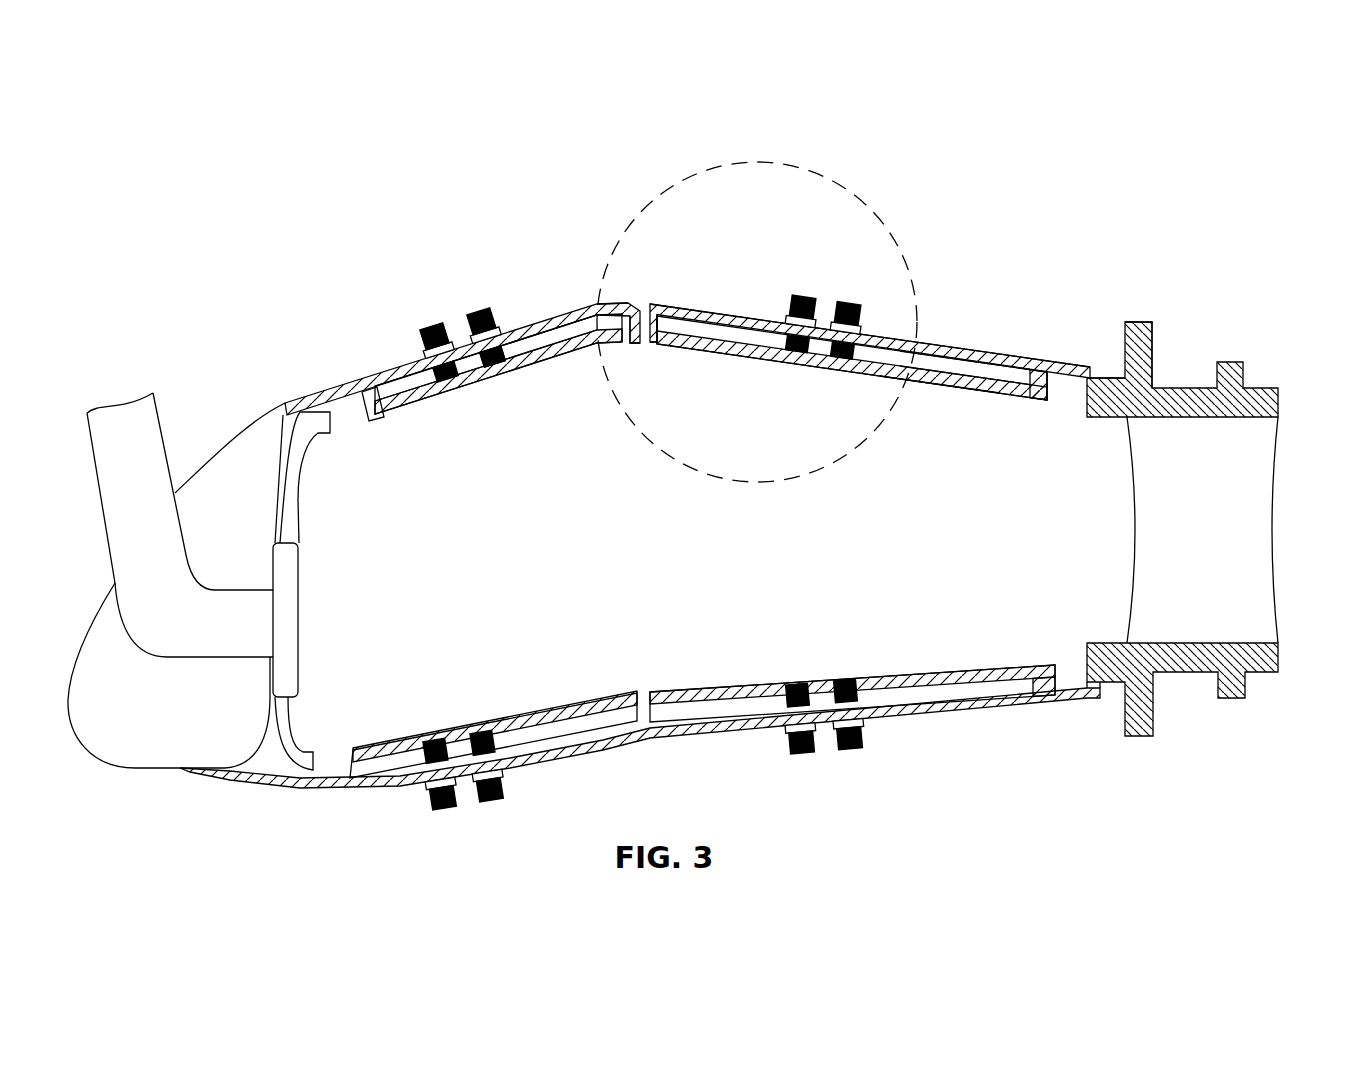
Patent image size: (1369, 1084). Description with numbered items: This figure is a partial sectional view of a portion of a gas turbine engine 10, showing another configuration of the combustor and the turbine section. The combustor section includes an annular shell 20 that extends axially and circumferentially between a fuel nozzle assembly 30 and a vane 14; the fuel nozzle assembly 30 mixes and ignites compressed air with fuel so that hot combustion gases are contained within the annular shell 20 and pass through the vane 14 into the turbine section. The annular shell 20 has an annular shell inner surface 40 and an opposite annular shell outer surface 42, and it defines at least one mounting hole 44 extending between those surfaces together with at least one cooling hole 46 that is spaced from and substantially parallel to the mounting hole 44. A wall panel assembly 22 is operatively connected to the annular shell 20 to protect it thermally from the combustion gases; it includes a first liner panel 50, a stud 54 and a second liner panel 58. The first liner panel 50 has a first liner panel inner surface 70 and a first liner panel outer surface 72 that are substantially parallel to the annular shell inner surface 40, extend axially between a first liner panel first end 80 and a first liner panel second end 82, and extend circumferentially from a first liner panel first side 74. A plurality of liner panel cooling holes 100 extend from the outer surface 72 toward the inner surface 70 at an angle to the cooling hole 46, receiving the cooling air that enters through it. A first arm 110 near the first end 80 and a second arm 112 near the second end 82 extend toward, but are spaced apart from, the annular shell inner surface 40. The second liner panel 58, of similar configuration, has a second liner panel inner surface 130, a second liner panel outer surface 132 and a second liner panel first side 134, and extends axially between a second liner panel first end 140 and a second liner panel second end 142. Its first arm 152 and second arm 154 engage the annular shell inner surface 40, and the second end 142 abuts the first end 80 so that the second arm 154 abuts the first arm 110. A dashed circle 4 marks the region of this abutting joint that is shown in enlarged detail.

The gas turbine engine 10 is at (153, 180).
The detail region of FIG. 4 is at (757, 162).
The vane 14 is at (1275, 596).
The annular shell 20 is at (1077, 345).
The wall panel assembly 22 is at (598, 390).
The fuel nozzle assembly 30 is at (232, 672).
The annular shell inner surface 40 is at (1052, 398).
The annular shell outer surface 42 is at (1128, 322).
The mounting hole 44 is at (795, 325).
The cooling hole 46 is at (745, 307).
The first liner panel 50 is at (920, 395).
The stud 54 is at (800, 292).
The second liner panel 58 is at (470, 392).
The first liner panel inner surface 70 is at (1000, 402).
The first liner panel outer surface 72 is at (1000, 372).
The first liner panel first side 74 is at (965, 362).
The first liner panel first end 80 is at (661, 347).
The first liner panel second end 82 is at (1042, 402).
The liner panel cooling holes 100 is at (480, 392).
The first arm 110 is at (656, 325).
The second arm 112 is at (1040, 378).
The second liner panel inner surface 130 is at (388, 415).
The second liner panel outer surface 132 is at (410, 372).
The second liner panel first side 134 is at (463, 395).
The second liner panel first end 140 is at (365, 408).
The second liner panel second end 142 is at (635, 330).
The first arm 152 is at (345, 385).
The second arm 154 is at (615, 312).